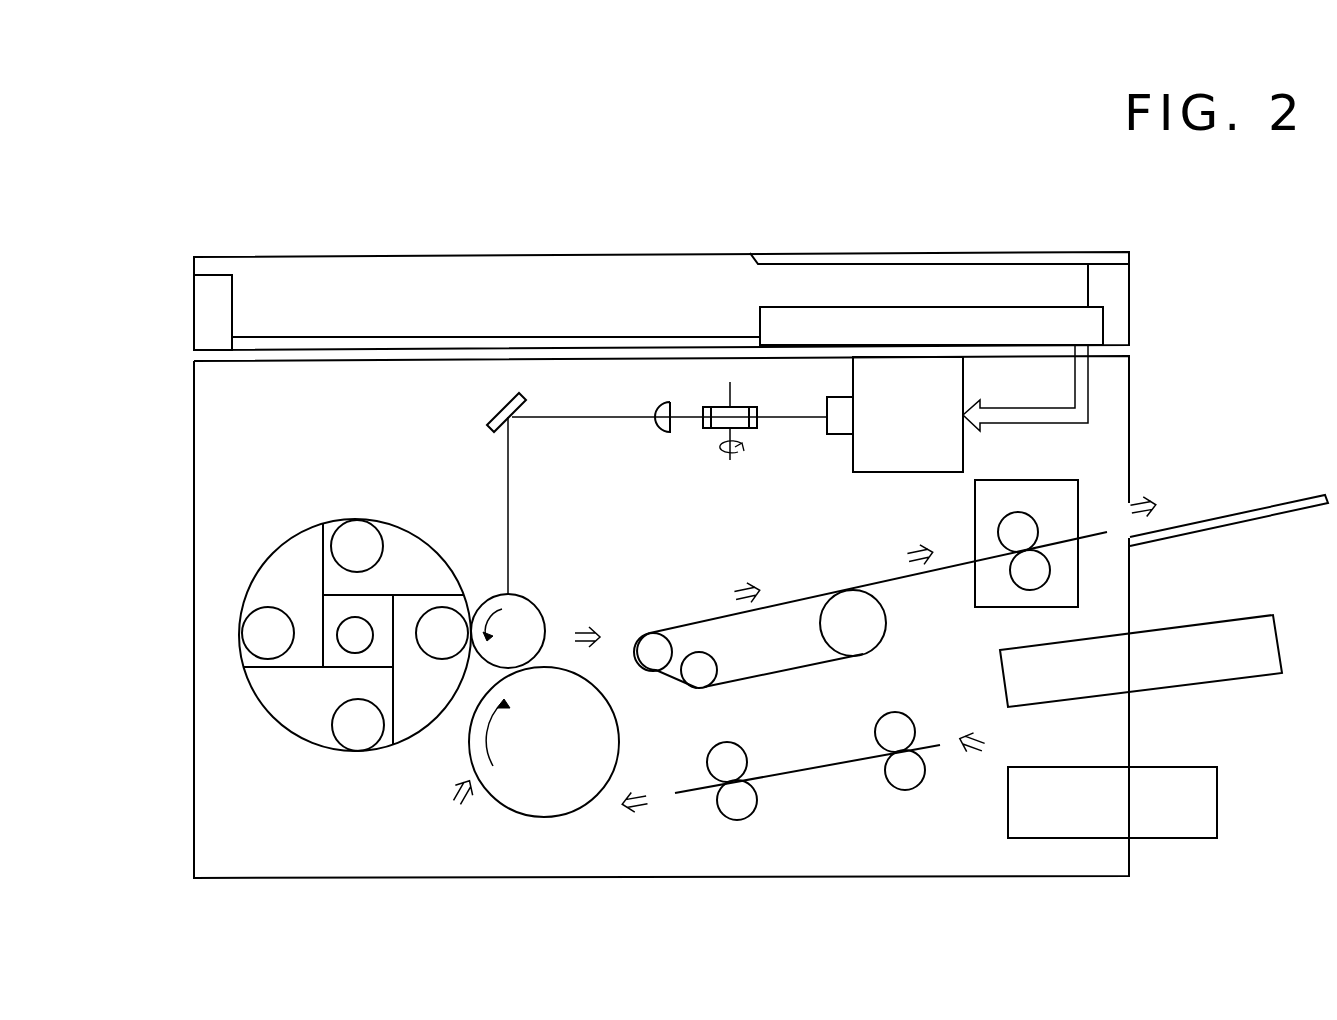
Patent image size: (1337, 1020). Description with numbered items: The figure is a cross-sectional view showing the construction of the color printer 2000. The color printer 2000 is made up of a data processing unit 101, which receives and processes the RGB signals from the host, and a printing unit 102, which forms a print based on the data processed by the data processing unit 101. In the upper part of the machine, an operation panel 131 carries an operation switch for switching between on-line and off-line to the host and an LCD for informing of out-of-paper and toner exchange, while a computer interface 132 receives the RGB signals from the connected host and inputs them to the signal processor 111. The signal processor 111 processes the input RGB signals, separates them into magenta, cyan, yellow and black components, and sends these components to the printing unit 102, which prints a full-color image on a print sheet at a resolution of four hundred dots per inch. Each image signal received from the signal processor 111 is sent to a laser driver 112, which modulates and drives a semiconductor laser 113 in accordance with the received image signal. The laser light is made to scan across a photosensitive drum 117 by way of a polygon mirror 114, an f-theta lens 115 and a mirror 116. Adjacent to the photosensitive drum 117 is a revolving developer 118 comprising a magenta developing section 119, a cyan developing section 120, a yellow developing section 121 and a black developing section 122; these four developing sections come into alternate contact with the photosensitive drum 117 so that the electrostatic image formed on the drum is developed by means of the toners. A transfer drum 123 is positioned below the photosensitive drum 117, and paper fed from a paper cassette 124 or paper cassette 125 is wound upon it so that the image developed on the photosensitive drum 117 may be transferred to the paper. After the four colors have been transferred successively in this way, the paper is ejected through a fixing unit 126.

The color printer 2000 is at (662, 212).
The data processing unit 101 is at (1129, 288).
The printing unit 102 is at (1129, 437).
The signal processor 111 is at (1103, 318).
The laser driver 112 is at (920, 472).
The semiconductor laser 113 is at (840, 436).
The polygon mirror 114 is at (741, 413).
The f-theta lens 115 is at (660, 409).
The mirror 116 is at (493, 414).
The photosensitive drum 117 is at (534, 596).
The revolving developer 118 is at (368, 626).
The magenta developing section 119 is at (470, 622).
The cyan developing section 120 is at (358, 747).
The yellow developing section 121 is at (241, 625).
The black developing section 122 is at (343, 520).
The transfer drum 123 is at (543, 818).
The paper cassette 124 is at (1183, 767).
The paper cassette 125 is at (1198, 622).
The fixing unit 126 is at (1043, 480).
The operation panel 131 is at (1018, 252).
The computer interface 132 is at (193, 335).